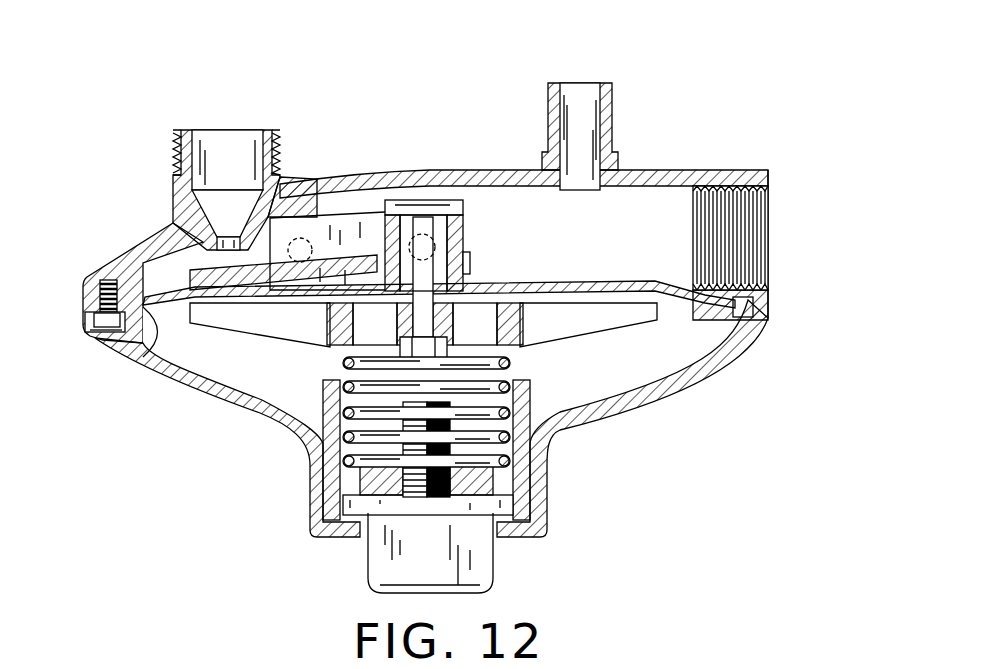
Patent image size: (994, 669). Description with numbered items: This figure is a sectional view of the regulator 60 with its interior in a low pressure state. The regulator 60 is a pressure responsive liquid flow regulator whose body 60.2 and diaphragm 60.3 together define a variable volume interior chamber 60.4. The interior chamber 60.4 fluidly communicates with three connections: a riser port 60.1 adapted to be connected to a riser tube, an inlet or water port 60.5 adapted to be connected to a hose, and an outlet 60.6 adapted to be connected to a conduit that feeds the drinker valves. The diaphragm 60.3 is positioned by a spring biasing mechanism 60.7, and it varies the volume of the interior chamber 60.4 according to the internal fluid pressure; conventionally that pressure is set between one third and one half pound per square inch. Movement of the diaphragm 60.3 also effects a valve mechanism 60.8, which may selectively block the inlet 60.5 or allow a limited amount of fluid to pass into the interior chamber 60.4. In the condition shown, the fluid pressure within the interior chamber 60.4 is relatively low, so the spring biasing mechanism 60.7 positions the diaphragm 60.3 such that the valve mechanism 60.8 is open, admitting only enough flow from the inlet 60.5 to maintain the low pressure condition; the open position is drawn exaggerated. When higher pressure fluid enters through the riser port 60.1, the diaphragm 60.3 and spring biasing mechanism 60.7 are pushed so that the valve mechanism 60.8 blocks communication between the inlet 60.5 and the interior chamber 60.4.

The regulator 60 is at (402, 62).
The riser port 60.1 is at (590, 115).
The body 60.2 is at (107, 258).
The diaphragm 60.3 is at (162, 318).
The interior chamber 60.4 is at (517, 200).
The inlet 60.5 is at (207, 138).
The outlet 60.6 is at (747, 278).
The spring biasing mechanism 60.7 is at (546, 398).
The valve mechanism 60.8 is at (350, 203).